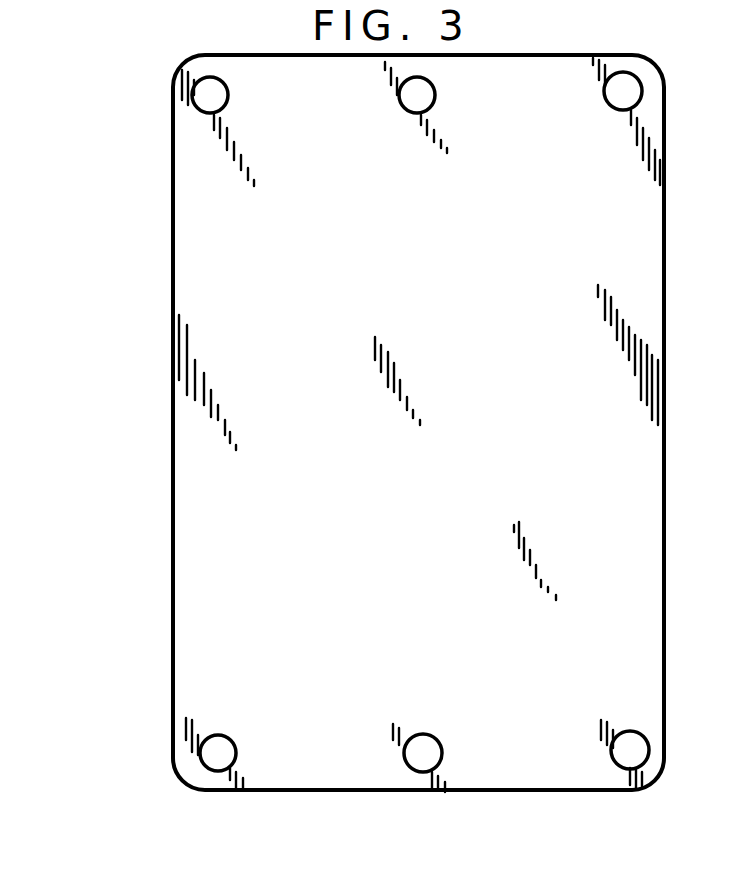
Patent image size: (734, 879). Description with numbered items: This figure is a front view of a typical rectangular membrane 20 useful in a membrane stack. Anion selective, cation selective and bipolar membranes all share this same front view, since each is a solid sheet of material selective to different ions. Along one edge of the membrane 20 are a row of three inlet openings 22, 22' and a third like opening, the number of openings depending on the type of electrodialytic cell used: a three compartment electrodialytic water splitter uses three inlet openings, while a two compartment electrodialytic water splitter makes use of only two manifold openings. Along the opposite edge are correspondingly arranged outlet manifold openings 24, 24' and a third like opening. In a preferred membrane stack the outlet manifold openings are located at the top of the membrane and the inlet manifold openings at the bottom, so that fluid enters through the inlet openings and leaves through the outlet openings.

The rectangular membrane 20 is at (170, 117).
The inlet opening 22 is at (238, 97).
The inlet opening 22' is at (446, 96).
The outlet manifold opening 24 is at (658, 767).
The outlet manifold opening 24' is at (405, 782).